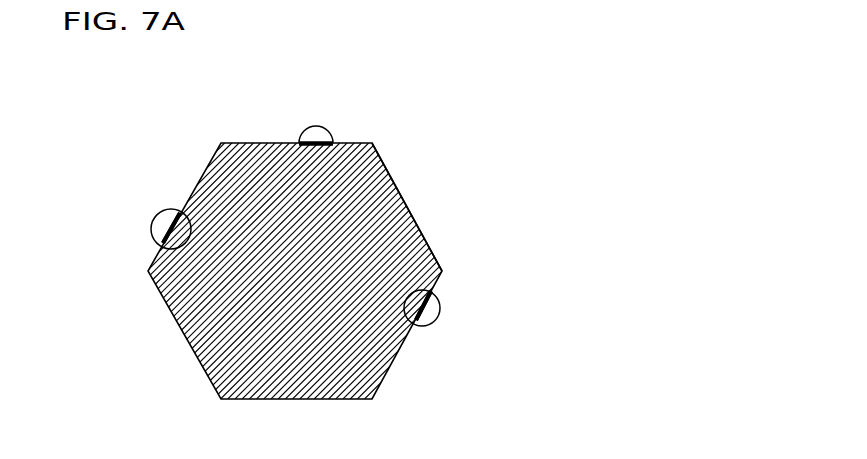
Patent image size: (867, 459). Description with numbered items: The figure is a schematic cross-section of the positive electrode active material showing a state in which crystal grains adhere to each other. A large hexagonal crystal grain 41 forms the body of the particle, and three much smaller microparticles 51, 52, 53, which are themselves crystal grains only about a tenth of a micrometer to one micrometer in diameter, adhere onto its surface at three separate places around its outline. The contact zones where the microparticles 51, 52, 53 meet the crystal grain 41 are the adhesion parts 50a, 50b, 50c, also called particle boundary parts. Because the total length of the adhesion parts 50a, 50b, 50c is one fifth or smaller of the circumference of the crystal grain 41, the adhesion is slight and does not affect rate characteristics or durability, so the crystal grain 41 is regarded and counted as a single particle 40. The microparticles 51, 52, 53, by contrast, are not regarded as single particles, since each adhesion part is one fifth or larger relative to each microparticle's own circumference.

The single particle 40 is at (392, 167).
The crystal grain 41 is at (417, 222).
The adhesion part 50a is at (300, 157).
The adhesion part 50b is at (403, 325).
The adhesion part 50c is at (167, 257).
The microparticle 51 is at (320, 129).
The microparticle 52 is at (433, 303).
The microparticle 53 is at (157, 224).